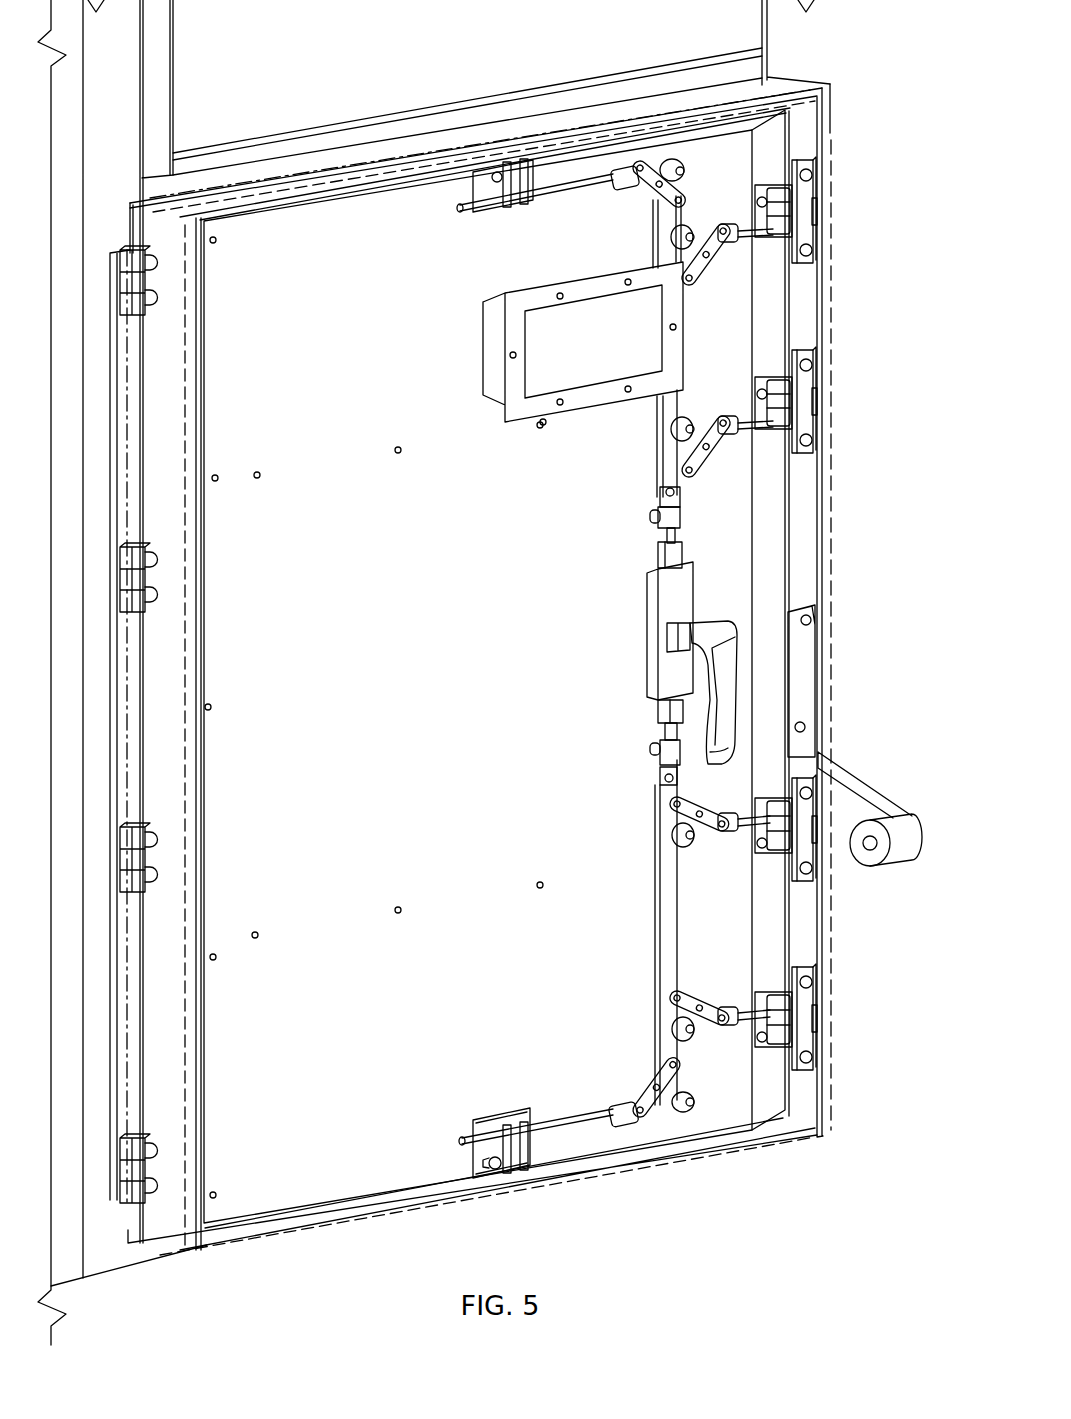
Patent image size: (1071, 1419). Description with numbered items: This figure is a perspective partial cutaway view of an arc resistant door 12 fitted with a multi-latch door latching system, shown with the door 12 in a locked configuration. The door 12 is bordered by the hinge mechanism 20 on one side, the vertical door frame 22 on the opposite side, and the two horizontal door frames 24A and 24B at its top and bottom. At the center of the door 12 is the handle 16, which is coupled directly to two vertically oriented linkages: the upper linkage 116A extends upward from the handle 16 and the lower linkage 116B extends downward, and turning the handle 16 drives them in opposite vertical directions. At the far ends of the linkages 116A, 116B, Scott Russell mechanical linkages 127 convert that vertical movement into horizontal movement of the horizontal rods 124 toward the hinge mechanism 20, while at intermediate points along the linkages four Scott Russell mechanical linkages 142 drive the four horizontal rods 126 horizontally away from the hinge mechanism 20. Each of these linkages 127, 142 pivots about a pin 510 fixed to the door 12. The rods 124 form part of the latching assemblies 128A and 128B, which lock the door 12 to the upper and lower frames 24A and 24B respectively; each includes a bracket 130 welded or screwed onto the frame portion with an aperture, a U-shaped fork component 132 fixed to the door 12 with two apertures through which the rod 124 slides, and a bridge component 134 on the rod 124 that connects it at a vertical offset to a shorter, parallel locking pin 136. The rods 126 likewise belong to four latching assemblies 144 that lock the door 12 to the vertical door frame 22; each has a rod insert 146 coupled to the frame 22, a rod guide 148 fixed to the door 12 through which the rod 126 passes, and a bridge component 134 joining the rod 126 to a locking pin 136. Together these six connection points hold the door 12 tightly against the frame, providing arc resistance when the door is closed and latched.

The door 12 is at (365, 235).
The handle 16 is at (705, 625).
The hinge mechanism 20 is at (110, 238).
The vertical door frame 22 is at (810, 80).
The horizontal door frame 24A is at (260, 192).
The horizontal door frame 24B is at (300, 1220).
The upper vertically oriented linkage 116A is at (650, 470).
The lower vertically oriented linkage 116B is at (655, 785).
The horizontal rod 124 is at (535, 203).
The horizontal rod 126 is at (745, 240).
The Scott Russell mechanical linkage 127 is at (640, 198).
The latching assembly 128A is at (505, 140).
The latching assembly 128B is at (480, 1078).
The bracket 130 is at (478, 1163).
The U-shaped fork component 132 is at (488, 1120).
The bridge component 134 is at (815, 176).
The locking pin 136 is at (758, 194).
The Scott Russell mechanical linkage 142 is at (698, 312).
The latching assembly 144 is at (838, 140).
The rod insert 146 is at (815, 212).
The rod guide 148 is at (815, 259).
The pin 510 is at (668, 158).